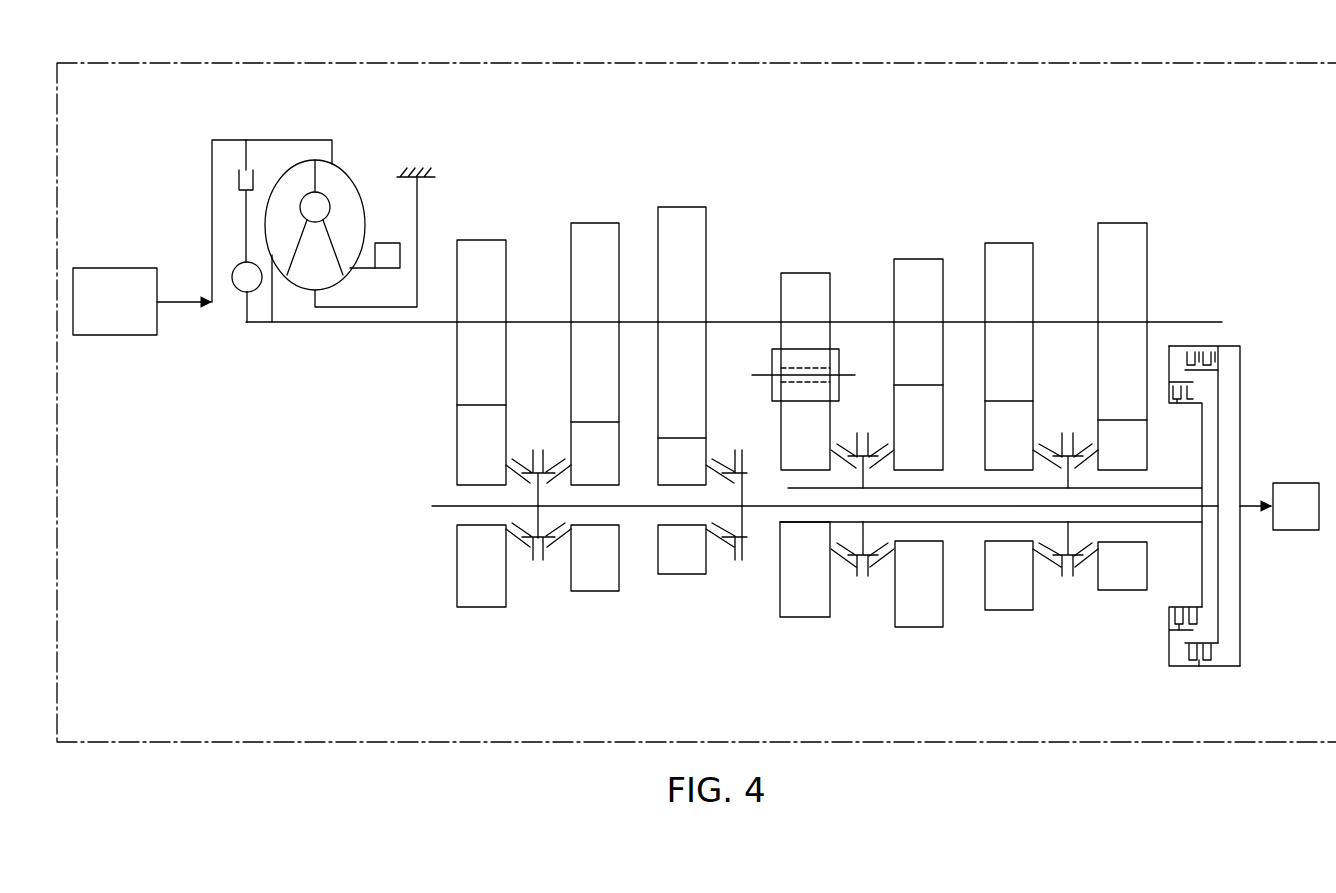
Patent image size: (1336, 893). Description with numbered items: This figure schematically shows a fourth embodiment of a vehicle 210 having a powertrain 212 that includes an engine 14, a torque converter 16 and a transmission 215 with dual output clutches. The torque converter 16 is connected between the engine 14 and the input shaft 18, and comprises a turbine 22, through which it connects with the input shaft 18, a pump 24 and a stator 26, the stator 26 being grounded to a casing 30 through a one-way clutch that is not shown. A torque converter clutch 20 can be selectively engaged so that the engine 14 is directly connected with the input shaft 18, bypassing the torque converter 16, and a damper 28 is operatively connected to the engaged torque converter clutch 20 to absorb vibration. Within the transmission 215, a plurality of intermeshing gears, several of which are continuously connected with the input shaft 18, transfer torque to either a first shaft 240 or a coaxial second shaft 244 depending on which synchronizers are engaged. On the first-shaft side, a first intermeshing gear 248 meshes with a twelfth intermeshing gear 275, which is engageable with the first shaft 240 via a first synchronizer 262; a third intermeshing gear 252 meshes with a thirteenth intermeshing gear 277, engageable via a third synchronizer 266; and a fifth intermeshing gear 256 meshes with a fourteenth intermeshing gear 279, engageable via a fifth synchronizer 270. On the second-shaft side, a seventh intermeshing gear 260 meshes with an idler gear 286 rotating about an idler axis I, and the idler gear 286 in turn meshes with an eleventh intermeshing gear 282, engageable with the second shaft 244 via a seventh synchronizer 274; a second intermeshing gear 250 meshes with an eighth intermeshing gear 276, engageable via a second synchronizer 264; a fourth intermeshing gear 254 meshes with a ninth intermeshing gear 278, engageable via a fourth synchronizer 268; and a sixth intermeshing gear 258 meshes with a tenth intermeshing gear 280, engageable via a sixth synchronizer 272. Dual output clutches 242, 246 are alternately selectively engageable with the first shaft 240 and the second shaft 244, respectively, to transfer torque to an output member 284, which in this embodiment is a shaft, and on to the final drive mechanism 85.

The vehicle 210 is at (1168, 62).
The engine 14 is at (112, 335).
The torque converter 16 is at (309, 240).
The input shaft 18 is at (402, 325).
The torque converter clutch 20 is at (236, 158).
The turbine 22 is at (287, 168).
The pump 24 is at (355, 188).
The stator 26 is at (302, 288).
The damper 28 is at (237, 291).
The casing 30 is at (427, 180).
The powertrain 212 is at (216, 467).
The transmission 215 is at (858, 150).
The first shaft 240 is at (633, 508).
The output clutch 242 is at (1214, 678).
The second shaft 244 is at (960, 526).
The output clutch 246 is at (1177, 410).
The first intermeshing gear 248 is at (506, 267).
The second intermeshing gear 250 is at (943, 278).
The third intermeshing gear 252 is at (619, 237).
The fourth intermeshing gear 254 is at (1033, 255).
The fifth intermeshing gear 256 is at (706, 238).
The sixth intermeshing gear 258 is at (1147, 255).
The seventh intermeshing gear 260 is at (830, 285).
The first synchronizer 262 is at (517, 554).
The second synchronizer 264 is at (887, 573).
The third synchronizer 266 is at (563, 552).
The fourth synchronizer 268 is at (1043, 565).
The fifth synchronizer 270 is at (715, 557).
The sixth synchronizer 272 is at (1092, 565).
The seventh synchronizer 274 is at (840, 573).
The twelfth intermeshing gear 275 is at (457, 572).
The eighth intermeshing gear 276 is at (943, 592).
The thirteenth intermeshing gear 277 is at (620, 572).
The ninth intermeshing gear 278 is at (985, 594).
The fourteenth intermeshing gear 279 is at (658, 574).
The tenth intermeshing gear 280 is at (1147, 575).
The eleventh intermeshing gear 282 is at (780, 594).
The output member 284 is at (1258, 482).
The idler gear 286 is at (840, 357).
The final drive mechanism 85 is at (1296, 506).
The idler axis I is at (759, 376).